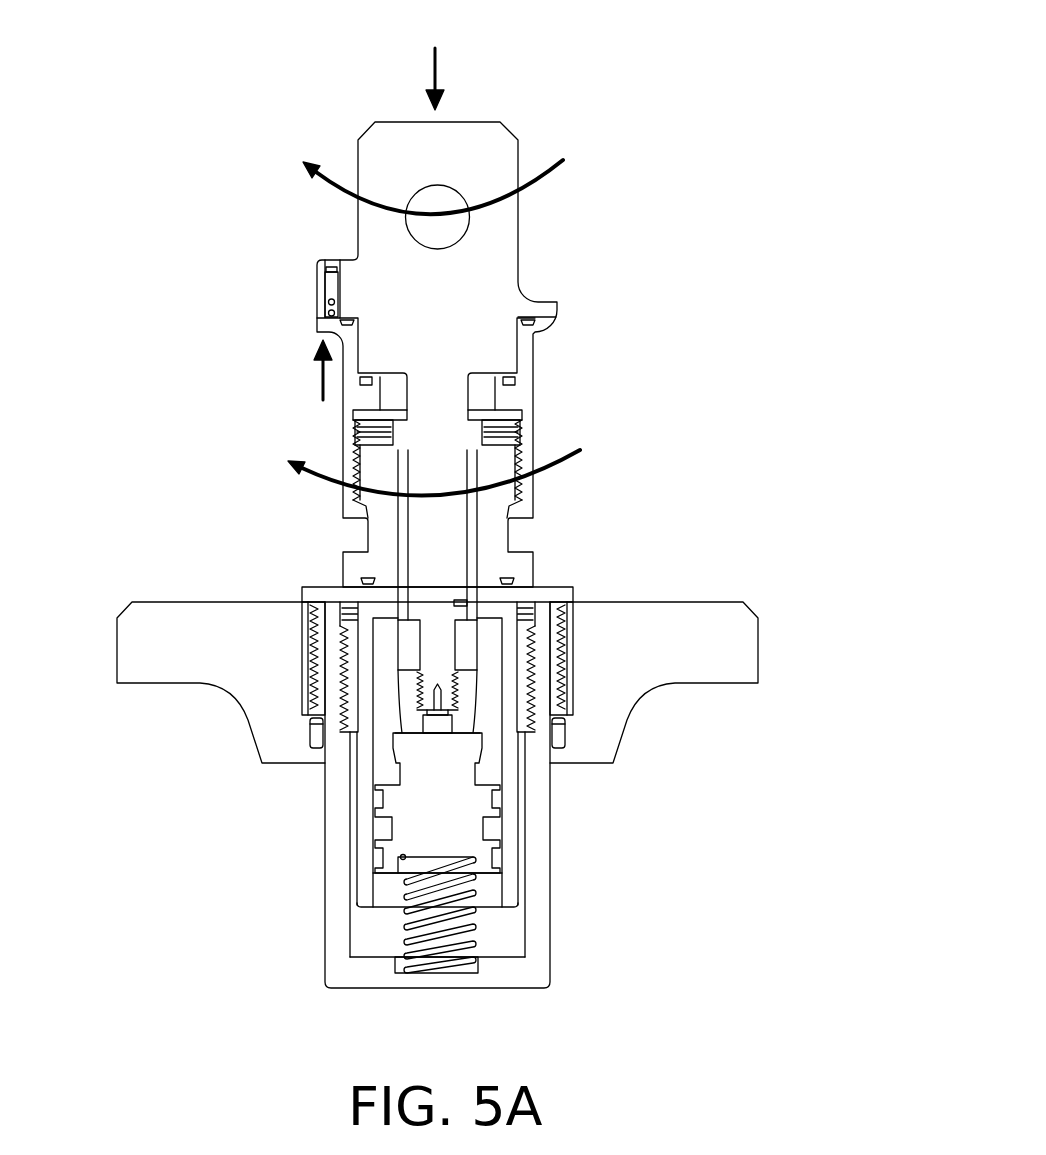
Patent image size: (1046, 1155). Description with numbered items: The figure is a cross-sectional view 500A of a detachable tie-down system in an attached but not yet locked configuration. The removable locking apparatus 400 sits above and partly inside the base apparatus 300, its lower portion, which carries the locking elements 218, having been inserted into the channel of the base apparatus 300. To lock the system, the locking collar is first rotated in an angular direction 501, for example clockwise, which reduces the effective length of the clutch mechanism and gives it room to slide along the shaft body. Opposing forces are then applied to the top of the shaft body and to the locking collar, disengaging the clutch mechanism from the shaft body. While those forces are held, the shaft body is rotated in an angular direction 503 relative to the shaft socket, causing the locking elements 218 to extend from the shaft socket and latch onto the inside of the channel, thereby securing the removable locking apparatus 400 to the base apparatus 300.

The cross-sectional view 500A is at (623, 48).
The removable locking apparatus 400 is at (100, 113).
The base apparatus 300 is at (100, 598).
The locking elements 218 is at (467, 647).
The angular direction 503 is at (446, 192).
The angular direction 501 is at (447, 480).